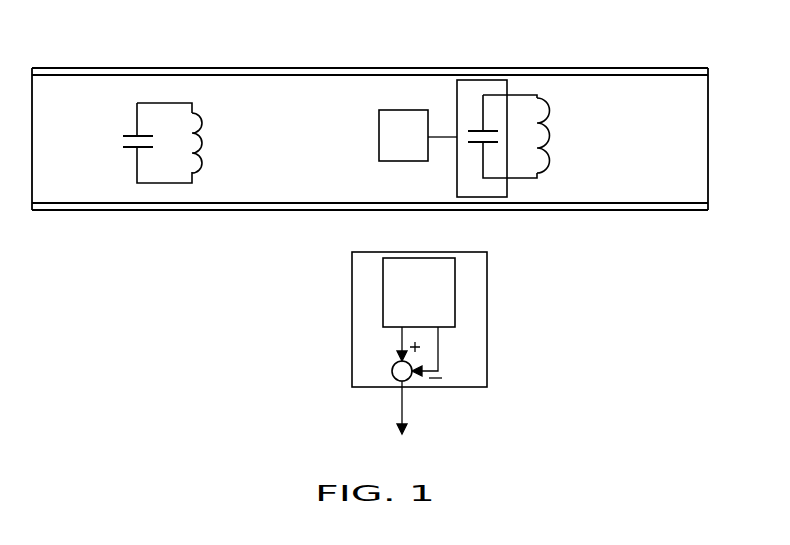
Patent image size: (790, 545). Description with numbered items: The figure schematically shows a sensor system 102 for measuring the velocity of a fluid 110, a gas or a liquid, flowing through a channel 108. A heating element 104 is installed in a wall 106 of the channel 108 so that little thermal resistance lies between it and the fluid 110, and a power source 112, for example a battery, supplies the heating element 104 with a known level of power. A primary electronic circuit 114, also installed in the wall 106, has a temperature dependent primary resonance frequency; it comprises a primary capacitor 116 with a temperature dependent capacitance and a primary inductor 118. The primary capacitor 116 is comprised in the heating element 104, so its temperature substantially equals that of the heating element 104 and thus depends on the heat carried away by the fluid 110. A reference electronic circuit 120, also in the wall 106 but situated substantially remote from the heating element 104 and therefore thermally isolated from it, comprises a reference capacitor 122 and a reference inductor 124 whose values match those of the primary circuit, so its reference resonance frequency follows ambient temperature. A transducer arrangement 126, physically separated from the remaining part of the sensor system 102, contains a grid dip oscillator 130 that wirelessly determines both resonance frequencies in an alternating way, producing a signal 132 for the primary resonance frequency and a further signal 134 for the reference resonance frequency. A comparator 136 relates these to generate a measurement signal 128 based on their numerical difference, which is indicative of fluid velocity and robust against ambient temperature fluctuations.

The sensor system 102 is at (212, 21).
The heating element 104 is at (480, 80).
The wall 106 is at (254, 210).
The channel 108 is at (642, 68).
The fluid 110 is at (309, 120).
The power source 112 is at (398, 110).
The primary electronic circuit 114 is at (520, 178).
The primary capacitor 116 is at (473, 148).
The primary inductor 118 is at (548, 134).
The reference electronic circuit 120 is at (168, 183).
The reference capacitor 122 is at (121, 142).
The reference inductor 124 is at (203, 143).
The transducer arrangement 126 is at (488, 308).
The measurement signal 128 is at (400, 405).
The grid dip oscillator 130 is at (437, 307).
The signal 132 is at (400, 338).
The further signal 134 is at (438, 346).
The comparator 136 is at (392, 372).